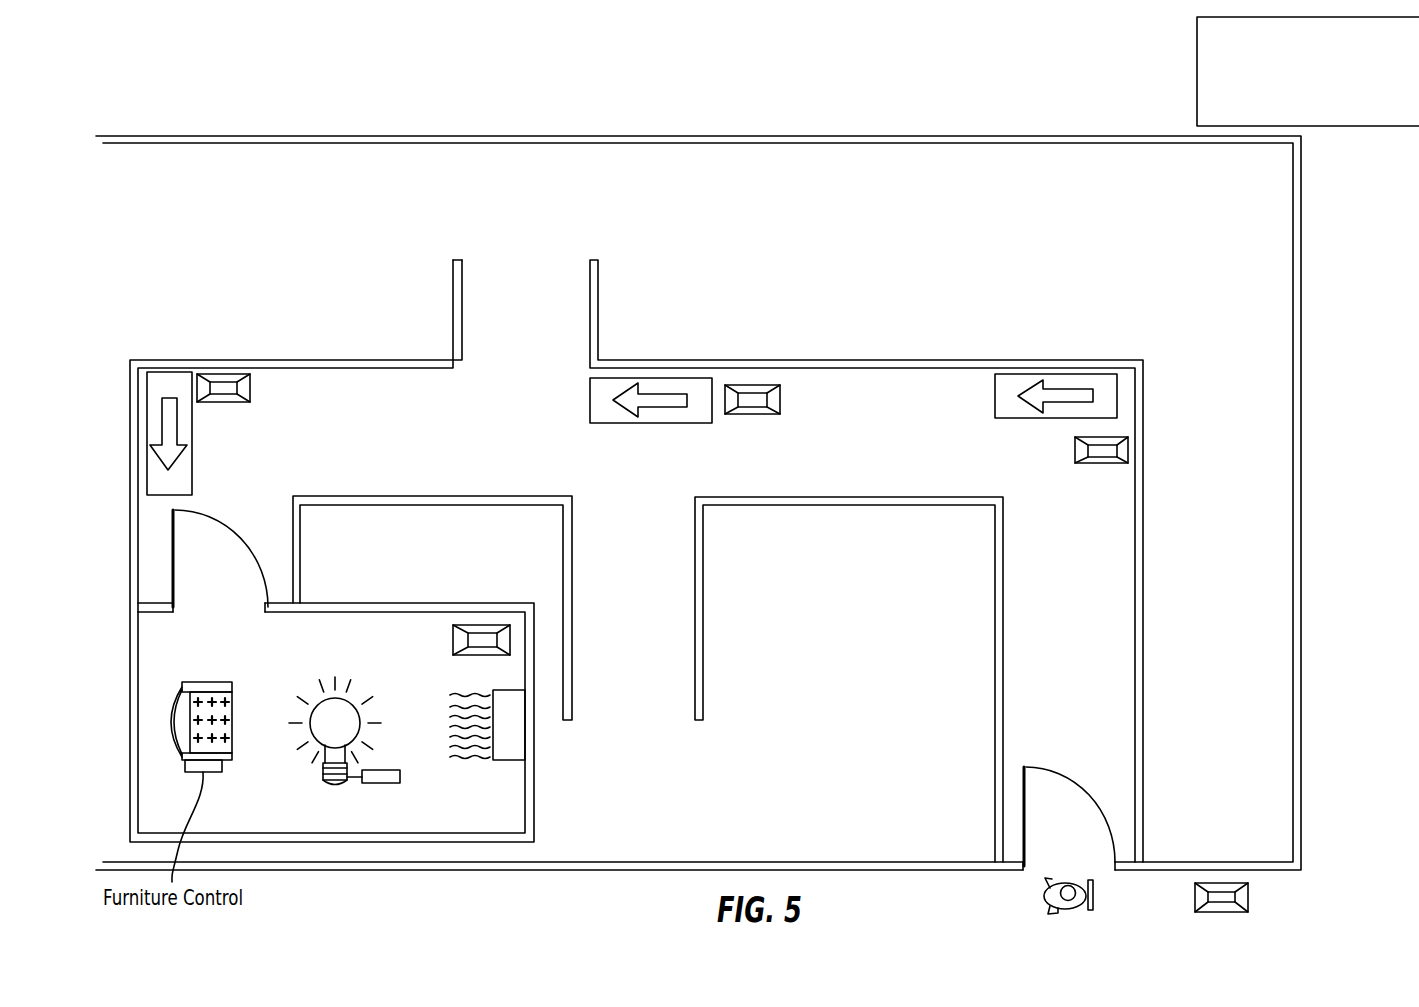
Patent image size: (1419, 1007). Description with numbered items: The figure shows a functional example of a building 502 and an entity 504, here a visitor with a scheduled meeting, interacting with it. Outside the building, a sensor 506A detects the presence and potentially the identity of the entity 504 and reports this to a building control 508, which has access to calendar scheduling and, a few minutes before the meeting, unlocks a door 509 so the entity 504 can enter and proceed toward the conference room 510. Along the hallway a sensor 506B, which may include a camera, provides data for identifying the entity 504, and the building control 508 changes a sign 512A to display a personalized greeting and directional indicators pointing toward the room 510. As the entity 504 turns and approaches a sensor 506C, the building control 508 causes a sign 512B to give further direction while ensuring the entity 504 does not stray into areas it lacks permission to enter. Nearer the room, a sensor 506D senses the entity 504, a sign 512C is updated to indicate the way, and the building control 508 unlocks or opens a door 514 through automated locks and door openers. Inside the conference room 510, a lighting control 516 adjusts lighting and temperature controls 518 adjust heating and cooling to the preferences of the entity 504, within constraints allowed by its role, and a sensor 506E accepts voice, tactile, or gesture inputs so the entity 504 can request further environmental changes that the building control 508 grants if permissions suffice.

The building 502 is at (1302, 702).
The entity 504 is at (1103, 893).
The sensor 506A is at (1250, 893).
The sensor 506B is at (1130, 443).
The sensor 506C is at (750, 385).
The sensor 506D is at (225, 375).
The sensor 506E is at (470, 625).
The building control 508 is at (1296, 95).
The door 509 is at (1022, 808).
The conference room 510 is at (280, 825).
The sign 512A is at (1055, 374).
The sign 512B is at (610, 378).
The sign 512C is at (192, 440).
The door 514 is at (172, 549).
The lighting control 516 is at (383, 783).
The temperature controls 518 is at (527, 747).